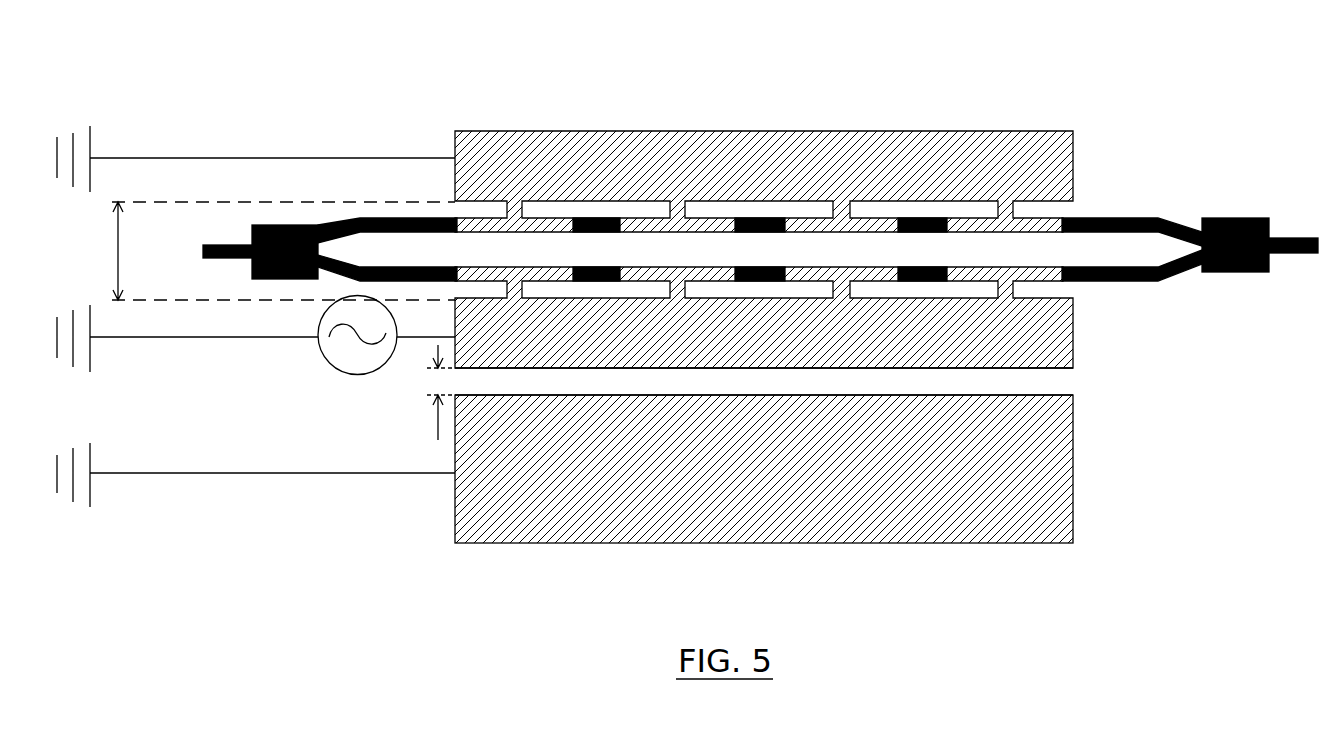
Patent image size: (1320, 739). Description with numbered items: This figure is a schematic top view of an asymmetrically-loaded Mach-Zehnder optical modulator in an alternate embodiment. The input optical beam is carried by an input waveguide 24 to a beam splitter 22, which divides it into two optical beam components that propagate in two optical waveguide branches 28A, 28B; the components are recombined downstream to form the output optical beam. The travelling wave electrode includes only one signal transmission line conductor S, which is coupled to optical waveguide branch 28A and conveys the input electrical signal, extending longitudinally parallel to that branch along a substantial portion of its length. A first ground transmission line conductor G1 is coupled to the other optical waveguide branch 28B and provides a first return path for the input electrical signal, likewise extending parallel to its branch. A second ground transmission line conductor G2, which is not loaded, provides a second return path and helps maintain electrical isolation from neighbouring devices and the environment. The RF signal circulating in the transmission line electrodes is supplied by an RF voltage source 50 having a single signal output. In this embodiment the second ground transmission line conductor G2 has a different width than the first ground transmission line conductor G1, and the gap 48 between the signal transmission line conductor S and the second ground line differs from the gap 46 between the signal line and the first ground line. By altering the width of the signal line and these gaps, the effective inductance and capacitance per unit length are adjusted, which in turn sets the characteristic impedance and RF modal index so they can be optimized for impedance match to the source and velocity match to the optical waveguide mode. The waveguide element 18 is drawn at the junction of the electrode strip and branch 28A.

The waveguide / optical fiber element 18 is at (1065, 217).
The beam splitter 22 is at (266, 280).
The input waveguide 24 is at (203, 252).
The optical waveguide branch 28A is at (1142, 217).
The optical waveguide branch 28B is at (1117, 281).
The gap 46 is at (279, 251).
The gap 48 is at (438, 422).
The RF voltage source 50 is at (336, 366).
The first ground transmission line conductor G1 is at (945, 131).
The second ground transmission line conductor G2 is at (945, 543).
The signal transmission line conductor S is at (1075, 368).